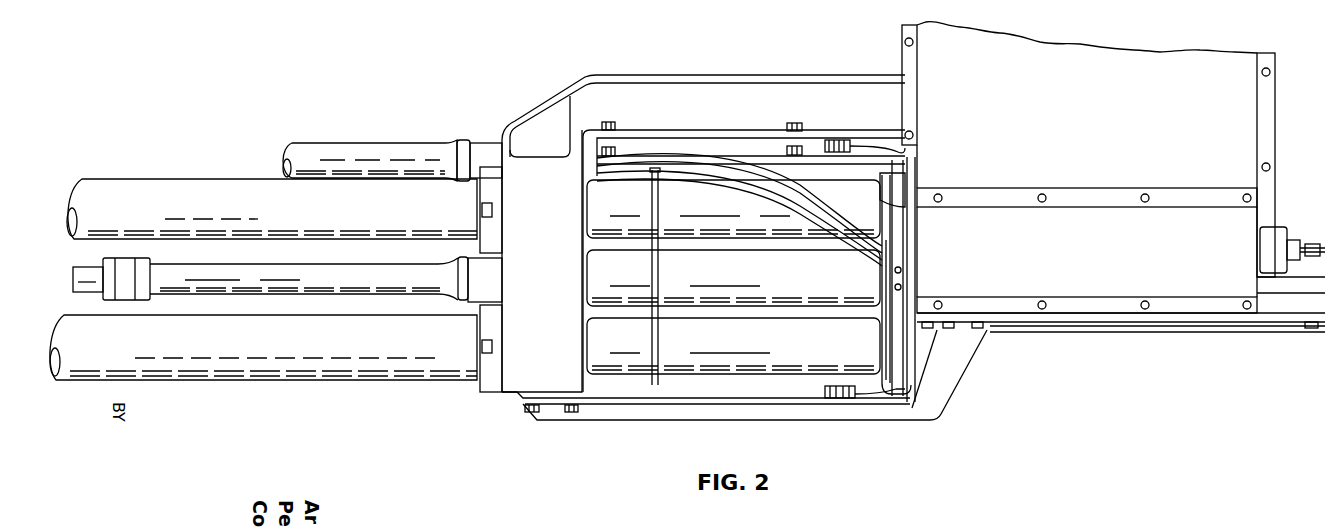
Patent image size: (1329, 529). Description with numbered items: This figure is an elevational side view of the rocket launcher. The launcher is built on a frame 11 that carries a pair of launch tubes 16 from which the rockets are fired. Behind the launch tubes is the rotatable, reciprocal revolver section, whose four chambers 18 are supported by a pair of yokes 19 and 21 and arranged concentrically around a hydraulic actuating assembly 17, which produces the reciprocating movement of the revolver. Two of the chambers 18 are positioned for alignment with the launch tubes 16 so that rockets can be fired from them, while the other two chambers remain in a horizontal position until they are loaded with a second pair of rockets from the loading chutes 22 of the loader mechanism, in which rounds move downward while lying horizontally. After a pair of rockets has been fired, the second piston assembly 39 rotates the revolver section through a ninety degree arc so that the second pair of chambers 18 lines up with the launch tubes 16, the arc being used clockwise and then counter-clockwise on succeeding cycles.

The frame 11 is at (549, 97).
The launch tubes 16 is at (419, 202).
The hydraulic actuating assembly 17 is at (398, 261).
The chambers 18 is at (723, 210).
The yoke 19 is at (651, 384).
The yoke 21 is at (896, 377).
The loading chutes 22 is at (1112, 121).
The second piston assembly 39 is at (401, 142).